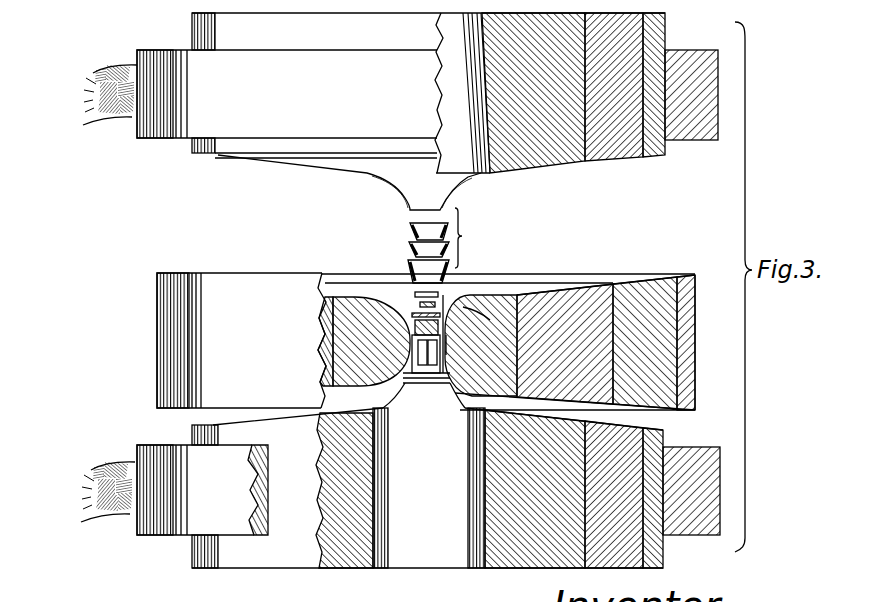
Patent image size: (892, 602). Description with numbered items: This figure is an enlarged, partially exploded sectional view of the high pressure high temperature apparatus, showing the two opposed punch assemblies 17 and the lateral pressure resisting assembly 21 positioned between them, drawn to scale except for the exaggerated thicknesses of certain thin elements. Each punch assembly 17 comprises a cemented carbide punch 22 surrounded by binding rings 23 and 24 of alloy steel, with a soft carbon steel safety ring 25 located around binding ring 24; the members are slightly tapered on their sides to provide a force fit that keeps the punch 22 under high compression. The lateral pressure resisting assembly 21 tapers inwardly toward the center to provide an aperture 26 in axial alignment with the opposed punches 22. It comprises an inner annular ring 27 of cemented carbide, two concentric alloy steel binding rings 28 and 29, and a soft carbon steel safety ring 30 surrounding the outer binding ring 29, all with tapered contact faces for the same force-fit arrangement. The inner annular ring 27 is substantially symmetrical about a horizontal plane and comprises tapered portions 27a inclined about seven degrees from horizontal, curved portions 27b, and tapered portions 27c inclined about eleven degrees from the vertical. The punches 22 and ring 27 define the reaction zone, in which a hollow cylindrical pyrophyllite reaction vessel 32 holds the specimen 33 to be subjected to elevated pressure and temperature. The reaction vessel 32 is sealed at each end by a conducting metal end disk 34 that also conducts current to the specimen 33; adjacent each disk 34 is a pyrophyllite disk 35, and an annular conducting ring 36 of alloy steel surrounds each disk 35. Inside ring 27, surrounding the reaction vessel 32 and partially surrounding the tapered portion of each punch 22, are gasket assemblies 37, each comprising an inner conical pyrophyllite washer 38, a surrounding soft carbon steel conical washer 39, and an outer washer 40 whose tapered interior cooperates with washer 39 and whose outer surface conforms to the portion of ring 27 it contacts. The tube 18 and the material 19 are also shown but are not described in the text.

The punch assembly 17 is at (189, 155).
The tube 18 is at (161, 50).
The fibrous material 19 is at (110, 70).
The lateral pressure resisting assembly 21 is at (150, 320).
The punch 22 is at (473, 182).
The binding ring 23 is at (553, 163).
The binding ring 24 is at (626, 160).
The safety ring 25 is at (654, 158).
The aperture 26 is at (452, 292).
The inner annular ring 27 is at (522, 300).
The tapered portion 27a is at (505, 294).
The curved portion 27b is at (486, 318).
The tapered portion 27c is at (449, 352).
The binding ring 28 is at (578, 294).
The binding ring 29 is at (648, 292).
The safety ring 30 is at (688, 290).
The reaction vessel 32 is at (415, 329).
The specimen 33 is at (412, 315).
The conducting metal end disk 34 is at (444, 330).
The pyrophyllite disk 35 is at (420, 304).
The annular conducting ring 36 is at (418, 294).
The gasket assembly 37 is at (398, 416).
The conical pyrophyllite washer 38 is at (416, 234).
The conical washer 39 is at (415, 250).
The washer 40 is at (412, 272).